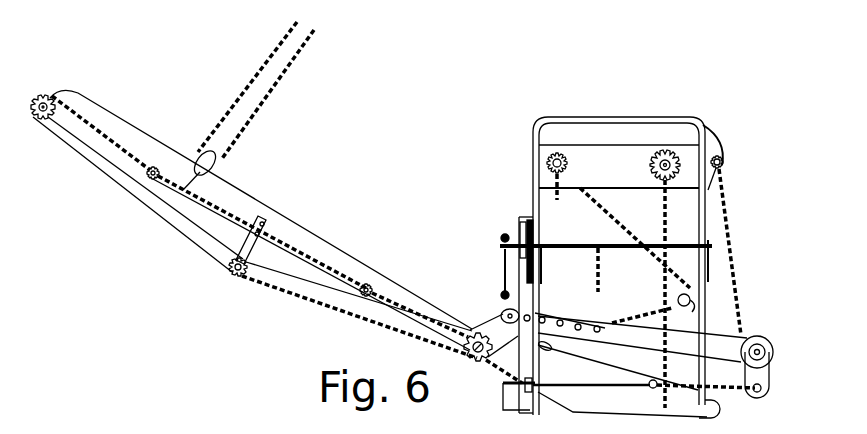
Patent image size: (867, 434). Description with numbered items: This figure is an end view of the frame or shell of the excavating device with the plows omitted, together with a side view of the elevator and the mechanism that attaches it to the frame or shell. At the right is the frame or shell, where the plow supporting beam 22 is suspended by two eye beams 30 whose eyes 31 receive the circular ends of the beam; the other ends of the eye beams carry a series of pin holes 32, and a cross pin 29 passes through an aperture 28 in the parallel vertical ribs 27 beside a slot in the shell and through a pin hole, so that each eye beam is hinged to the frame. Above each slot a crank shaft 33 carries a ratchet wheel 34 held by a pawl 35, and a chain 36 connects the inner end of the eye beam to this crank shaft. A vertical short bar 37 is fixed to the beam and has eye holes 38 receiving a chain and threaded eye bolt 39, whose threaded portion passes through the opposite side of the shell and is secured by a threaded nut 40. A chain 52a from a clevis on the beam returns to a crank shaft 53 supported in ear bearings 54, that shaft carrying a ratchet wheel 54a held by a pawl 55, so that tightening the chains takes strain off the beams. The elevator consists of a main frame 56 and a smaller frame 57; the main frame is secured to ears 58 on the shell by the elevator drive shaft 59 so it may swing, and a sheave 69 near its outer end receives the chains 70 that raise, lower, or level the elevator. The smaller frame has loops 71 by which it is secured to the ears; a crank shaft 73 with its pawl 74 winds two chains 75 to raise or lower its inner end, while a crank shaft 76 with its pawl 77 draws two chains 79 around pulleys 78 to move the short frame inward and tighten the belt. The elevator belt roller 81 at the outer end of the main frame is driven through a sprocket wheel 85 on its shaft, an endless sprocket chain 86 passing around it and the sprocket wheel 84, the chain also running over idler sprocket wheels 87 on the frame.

The plow supporting beam 22 is at (774, 350).
The vertical ribs 27 is at (503, 283).
The aperture 28 is at (501, 296).
The cross pin 29 is at (546, 315).
The eye beams 30 is at (640, 338).
The eyes 31 is at (764, 339).
The pin holes 32 is at (591, 324).
The crank shaft 33 is at (726, 162).
The ratchet wheel 34 is at (728, 157).
The pawl 35 is at (721, 138).
The chain 36 is at (736, 237).
The vertical short bar 37 is at (771, 367).
The eye holes 38 is at (762, 389).
The chain and threaded eye bolt 39 is at (655, 392).
The threaded nut 40 is at (527, 389).
The chain 52a is at (601, 266).
The crank shaft 53 is at (564, 244).
The ear bearings 54 is at (542, 263).
The ratchet wheel 54a is at (502, 234).
The pawl 55 is at (520, 217).
The main frame 56 is at (270, 202).
The smaller frame 57 is at (572, 412).
The ears 58 is at (496, 389).
The elevator drive shaft 59 is at (474, 356).
The sheave 69 is at (203, 152).
The chains 70 is at (300, 30).
The loops 71 is at (565, 346).
The crank shaft 73 is at (664, 150).
The pawl 74 is at (692, 126).
The chains 75 is at (668, 205).
The crank shaft 76 is at (546, 163).
The pawl 77 is at (568, 150).
The pulleys 78 is at (685, 307).
The chains 79 is at (637, 319).
The elevator belt roller 81 is at (47, 96).
The sprocket wheel 84 is at (496, 366).
The sprocket wheel 85 is at (38, 119).
The endless sprocket chain 86 is at (143, 200).
The idler sprocket wheels 87 is at (151, 168).